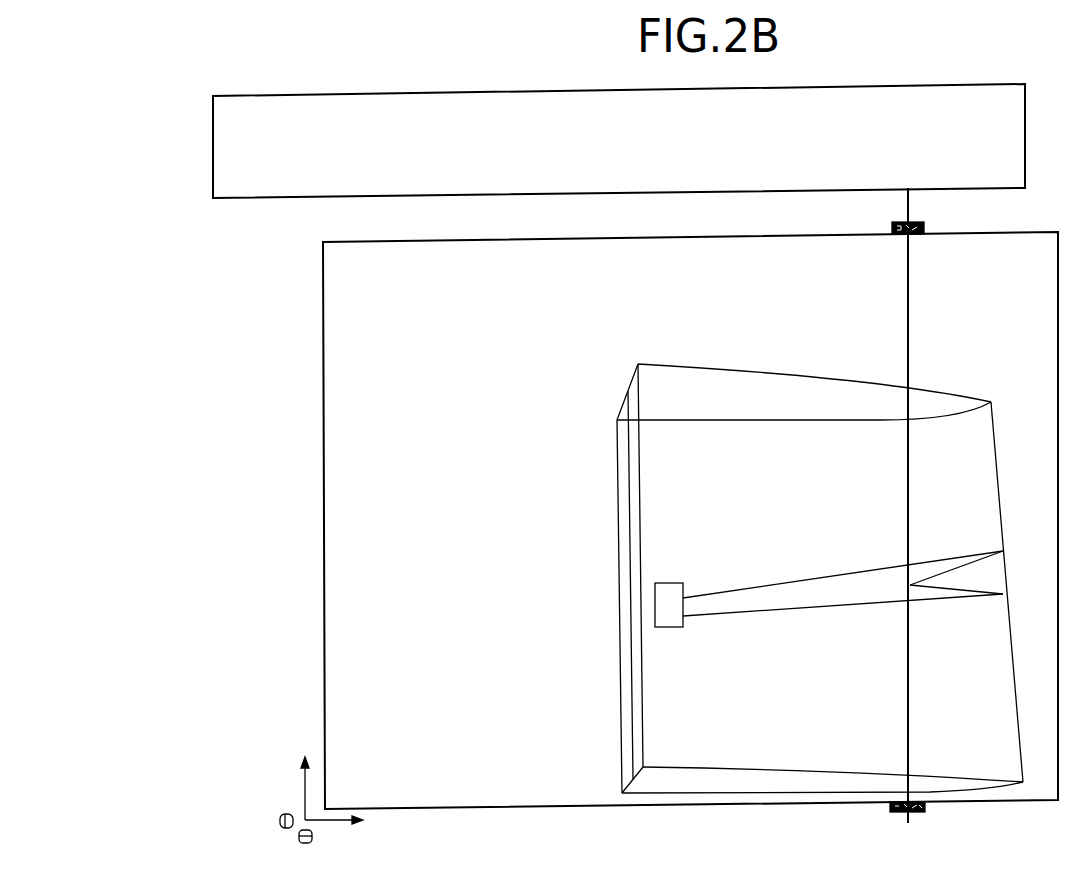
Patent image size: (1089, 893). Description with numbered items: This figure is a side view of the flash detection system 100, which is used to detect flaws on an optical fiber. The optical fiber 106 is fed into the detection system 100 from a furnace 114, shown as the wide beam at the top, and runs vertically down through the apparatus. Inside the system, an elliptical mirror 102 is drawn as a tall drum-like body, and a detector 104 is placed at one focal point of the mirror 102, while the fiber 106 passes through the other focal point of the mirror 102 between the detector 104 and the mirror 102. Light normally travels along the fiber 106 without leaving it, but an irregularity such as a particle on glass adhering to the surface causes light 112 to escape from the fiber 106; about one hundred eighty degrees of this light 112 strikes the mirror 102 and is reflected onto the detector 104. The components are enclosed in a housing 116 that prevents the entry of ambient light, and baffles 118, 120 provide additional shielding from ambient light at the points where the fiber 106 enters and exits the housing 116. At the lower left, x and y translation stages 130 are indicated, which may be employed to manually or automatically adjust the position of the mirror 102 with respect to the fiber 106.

The flash detection system 100 is at (262, 368).
The elliptical mirror 102 is at (962, 392).
The detector 104 is at (670, 628).
The optical fiber 106 is at (907, 300).
The light 112 is at (798, 582).
The furnace 114 is at (291, 198).
The housing 116 is at (323, 556).
The baffle 118 is at (924, 228).
The baffle 120 is at (890, 808).
The x and y translation stages 130 is at (298, 797).